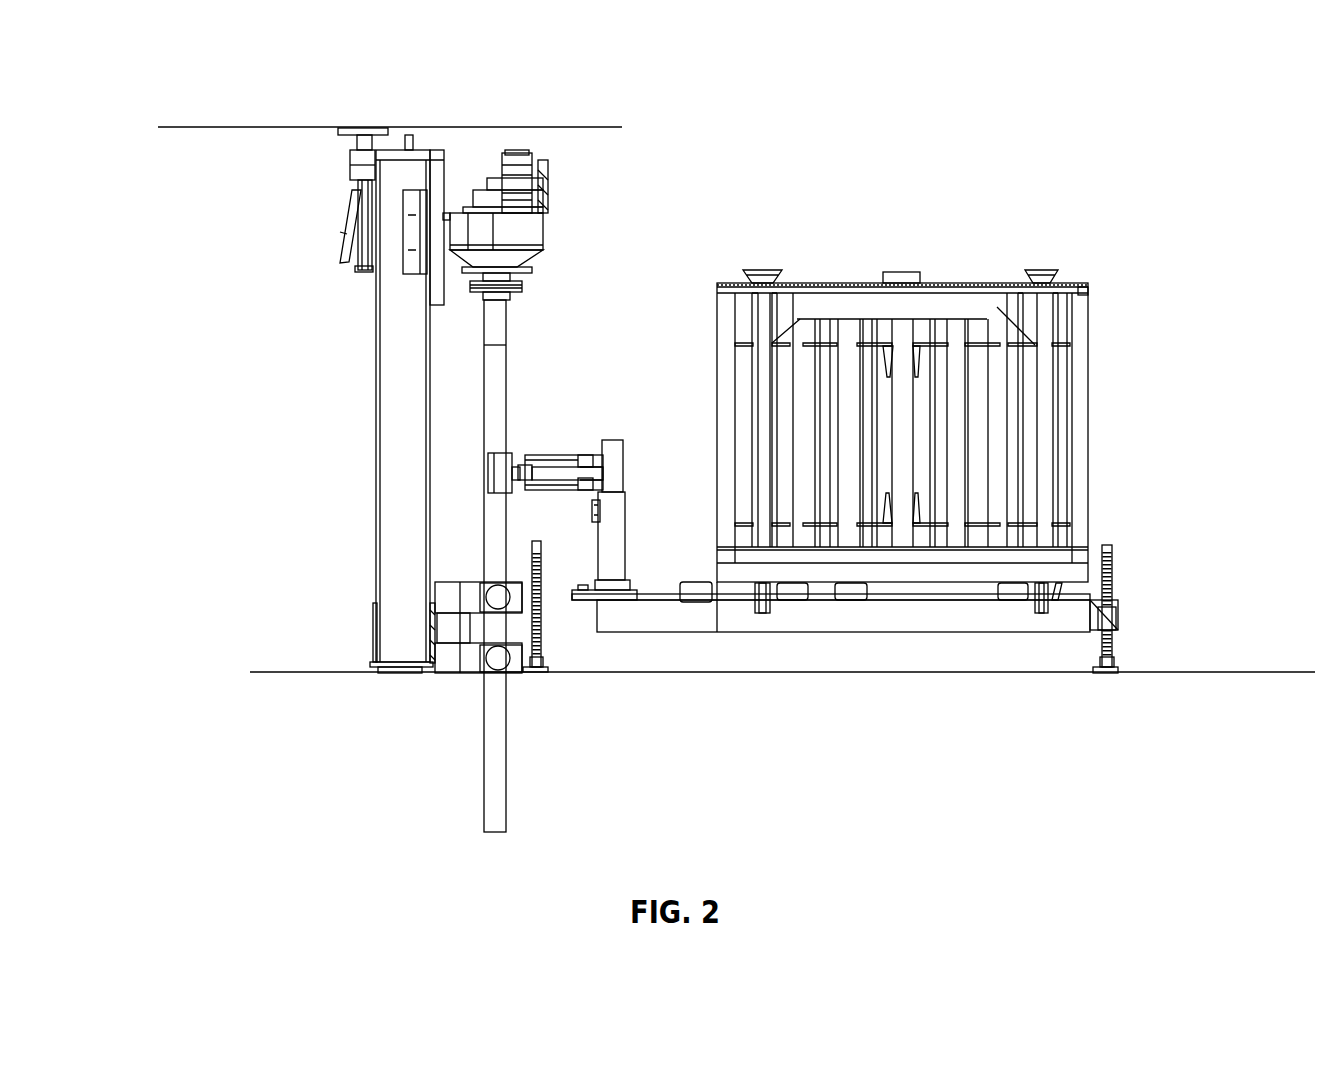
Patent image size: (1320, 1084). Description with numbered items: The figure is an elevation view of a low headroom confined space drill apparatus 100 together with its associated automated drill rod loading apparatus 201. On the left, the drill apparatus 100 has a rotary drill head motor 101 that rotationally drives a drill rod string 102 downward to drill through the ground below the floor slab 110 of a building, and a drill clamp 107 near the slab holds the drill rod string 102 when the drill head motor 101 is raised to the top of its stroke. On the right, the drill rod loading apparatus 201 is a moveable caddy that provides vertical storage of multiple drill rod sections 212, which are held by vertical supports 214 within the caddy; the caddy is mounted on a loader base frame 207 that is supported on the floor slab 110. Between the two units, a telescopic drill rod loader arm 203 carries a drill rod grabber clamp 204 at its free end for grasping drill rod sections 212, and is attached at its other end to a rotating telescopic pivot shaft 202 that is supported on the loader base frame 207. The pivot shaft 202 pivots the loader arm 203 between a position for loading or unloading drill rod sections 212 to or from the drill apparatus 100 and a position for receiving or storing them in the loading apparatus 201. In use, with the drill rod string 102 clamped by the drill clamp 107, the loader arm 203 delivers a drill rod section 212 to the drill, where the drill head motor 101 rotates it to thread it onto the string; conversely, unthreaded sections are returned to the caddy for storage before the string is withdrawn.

The low headroom drill apparatus 100 is at (318, 356).
The rotary drill head motor 101 is at (547, 178).
The drill rod string 102 is at (497, 382).
The drill clamp 107 is at (465, 667).
The floor slab 110 is at (255, 672).
The drill rod loading apparatus 201 is at (905, 268).
The telescopic pivot shaft 202 is at (613, 440).
The telescopic drill rod loader arm 203 is at (548, 455).
The drill rod grabber clamp 204 is at (502, 470).
The loader base frame 207 is at (1072, 618).
The drill rod sections 212 is at (822, 337).
The vertical supports 214 is at (980, 343).